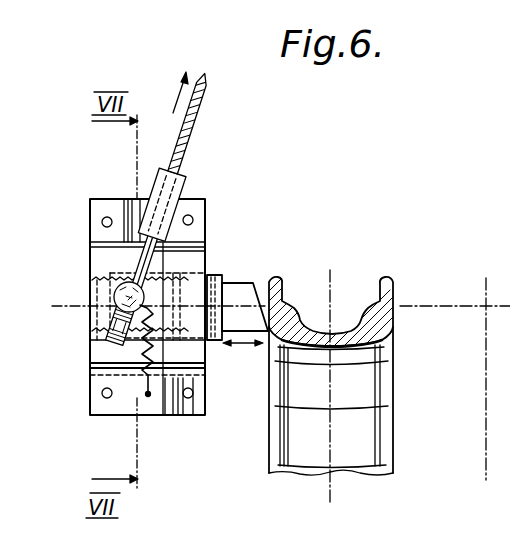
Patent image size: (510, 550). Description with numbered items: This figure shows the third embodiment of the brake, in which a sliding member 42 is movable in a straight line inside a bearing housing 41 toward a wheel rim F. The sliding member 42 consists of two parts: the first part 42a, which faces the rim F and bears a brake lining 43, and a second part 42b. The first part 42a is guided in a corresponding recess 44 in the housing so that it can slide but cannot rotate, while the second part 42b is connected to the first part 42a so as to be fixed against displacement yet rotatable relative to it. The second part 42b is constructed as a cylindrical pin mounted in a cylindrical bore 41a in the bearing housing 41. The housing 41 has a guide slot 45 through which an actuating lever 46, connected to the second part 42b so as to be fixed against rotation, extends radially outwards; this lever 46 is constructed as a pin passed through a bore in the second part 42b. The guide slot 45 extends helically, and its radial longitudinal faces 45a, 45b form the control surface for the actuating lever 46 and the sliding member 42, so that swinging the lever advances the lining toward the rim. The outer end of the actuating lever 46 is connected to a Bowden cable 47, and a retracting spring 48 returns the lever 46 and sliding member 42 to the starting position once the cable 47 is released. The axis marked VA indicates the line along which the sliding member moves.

The bearing housing 41 is at (88, 378).
The cylindrical bore 41a is at (88, 283).
The sliding member 42 is at (212, 274).
The first part of the sliding member 42a is at (216, 343).
The second part of the sliding member 42b is at (98, 236).
The brake lining 43 is at (240, 288).
The recess 44 is at (168, 273).
The guide slot 45 is at (107, 343).
The radial longitudinal face of the guide slot 45a is at (130, 215).
The radial longitudinal face of the guide slot 45b is at (152, 268).
The actuating lever 46 is at (108, 302).
The Bowden cable 47 is at (203, 94).
The retracting spring 48 is at (164, 415).
The rim F is at (391, 281).
The axis line VA is at (72, 304).